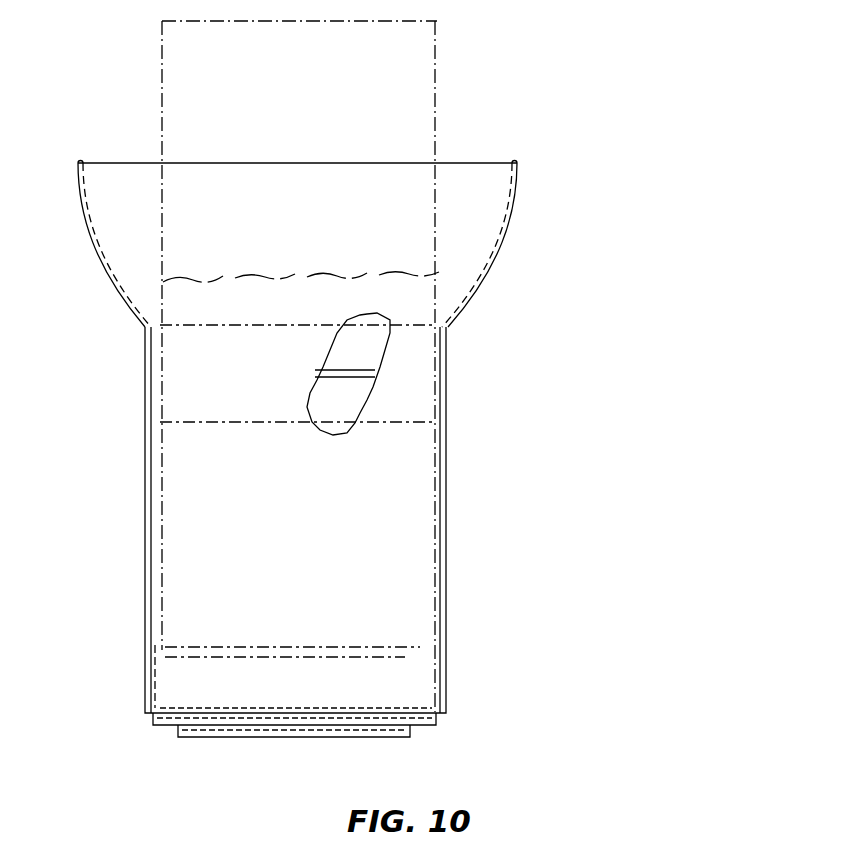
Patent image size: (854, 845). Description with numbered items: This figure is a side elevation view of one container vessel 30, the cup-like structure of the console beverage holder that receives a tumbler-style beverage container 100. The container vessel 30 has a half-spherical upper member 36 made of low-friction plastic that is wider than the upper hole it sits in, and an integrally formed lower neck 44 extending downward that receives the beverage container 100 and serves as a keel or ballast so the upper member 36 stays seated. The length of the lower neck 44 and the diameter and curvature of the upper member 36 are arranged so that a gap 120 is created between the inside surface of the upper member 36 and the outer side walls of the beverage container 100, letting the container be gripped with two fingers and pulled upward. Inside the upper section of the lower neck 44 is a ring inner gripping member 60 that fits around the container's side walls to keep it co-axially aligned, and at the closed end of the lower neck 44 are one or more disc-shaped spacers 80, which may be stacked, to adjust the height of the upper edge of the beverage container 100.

The container vessel 30 is at (88, 91).
The upper member 36 is at (91, 248).
The lower neck 44 is at (144, 451).
The gripping member 60 is at (368, 348).
The spacer 80 is at (407, 659).
The beverage container 100 is at (162, 68).
The gap 120 is at (455, 183).